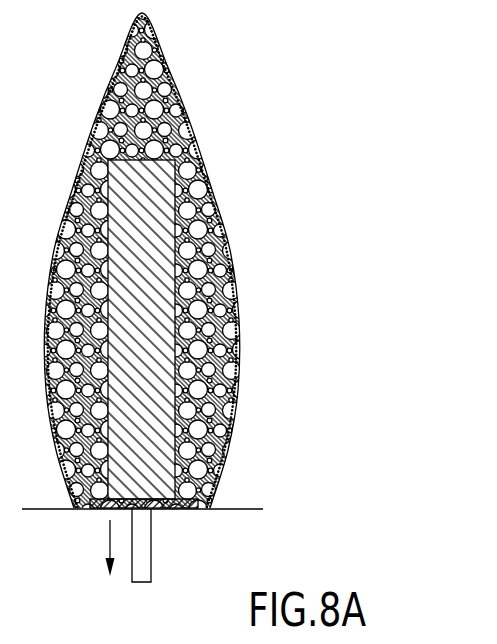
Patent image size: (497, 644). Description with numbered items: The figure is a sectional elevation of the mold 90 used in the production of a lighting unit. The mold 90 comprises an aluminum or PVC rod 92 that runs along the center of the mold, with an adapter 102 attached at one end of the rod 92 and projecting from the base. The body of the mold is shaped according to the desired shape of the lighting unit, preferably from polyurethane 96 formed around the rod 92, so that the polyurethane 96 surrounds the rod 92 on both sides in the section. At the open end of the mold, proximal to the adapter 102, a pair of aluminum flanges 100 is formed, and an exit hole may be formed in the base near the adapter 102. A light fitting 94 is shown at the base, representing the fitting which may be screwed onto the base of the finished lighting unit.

The mold 90 is at (220, 260).
The rod 92 is at (158, 245).
The light fitting 94 is at (210, 503).
The polyurethane 96 is at (205, 160).
The aluminum flanges 100 is at (245, 510).
The adapter 102 is at (143, 562).